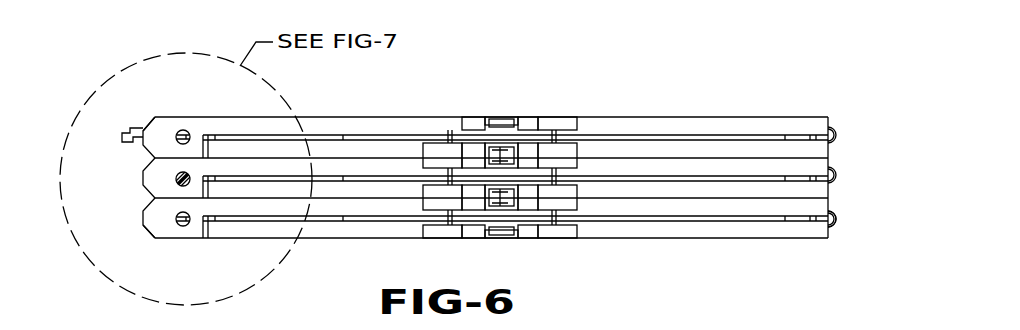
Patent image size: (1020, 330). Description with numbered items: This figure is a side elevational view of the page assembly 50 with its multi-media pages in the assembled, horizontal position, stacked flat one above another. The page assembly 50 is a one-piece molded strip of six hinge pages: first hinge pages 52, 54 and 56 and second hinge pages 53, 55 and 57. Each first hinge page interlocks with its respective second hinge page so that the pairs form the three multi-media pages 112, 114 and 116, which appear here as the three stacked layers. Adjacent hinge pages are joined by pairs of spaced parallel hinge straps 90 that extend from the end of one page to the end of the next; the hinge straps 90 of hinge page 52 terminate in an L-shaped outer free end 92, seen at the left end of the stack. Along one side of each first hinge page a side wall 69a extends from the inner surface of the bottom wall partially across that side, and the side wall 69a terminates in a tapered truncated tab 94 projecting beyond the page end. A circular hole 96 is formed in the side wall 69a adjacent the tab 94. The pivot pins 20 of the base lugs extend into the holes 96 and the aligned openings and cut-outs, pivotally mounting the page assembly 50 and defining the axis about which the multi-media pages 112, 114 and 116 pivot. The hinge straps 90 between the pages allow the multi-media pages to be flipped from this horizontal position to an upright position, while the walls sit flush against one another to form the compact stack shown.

The page assembly 50 is at (652, 89).
The first hinge page 52 is at (320, 116).
The second hinge page 53 is at (361, 140).
The first hinge page 54 is at (402, 155).
The second hinge page 55 is at (716, 200).
The first hinge page 56 is at (676, 215).
The second hinge page 57 is at (634, 240).
The side wall 69a is at (168, 130).
The hinge straps 90 is at (838, 226).
The L-shaped outer free end 92 is at (128, 130).
The tapered truncated tab 94 is at (146, 218).
The circular hole 96 is at (184, 130).
The pivot pin 20 is at (177, 178).
The multi-media page 112 is at (843, 120).
The multi-media page 114 is at (843, 163).
The multi-media page 116 is at (843, 203).